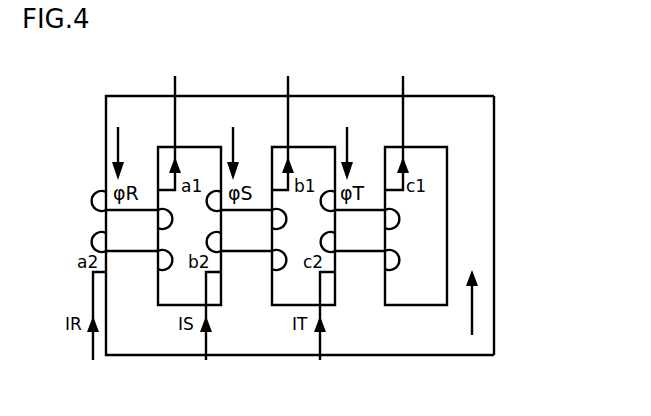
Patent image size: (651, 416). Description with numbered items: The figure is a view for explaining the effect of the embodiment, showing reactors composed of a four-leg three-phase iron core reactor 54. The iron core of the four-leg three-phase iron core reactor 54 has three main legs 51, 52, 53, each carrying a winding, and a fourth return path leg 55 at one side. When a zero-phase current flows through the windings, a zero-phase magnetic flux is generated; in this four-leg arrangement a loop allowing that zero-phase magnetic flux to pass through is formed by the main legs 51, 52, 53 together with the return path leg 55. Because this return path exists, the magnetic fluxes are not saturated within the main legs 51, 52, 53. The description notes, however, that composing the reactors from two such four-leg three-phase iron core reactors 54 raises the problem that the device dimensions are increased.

The main leg 51 is at (118, 220).
The main leg 52 is at (248, 282).
The main leg 53 is at (365, 282).
The four-leg three-phase iron core reactor 54 is at (104, 95).
The return path leg 55 is at (477, 220).